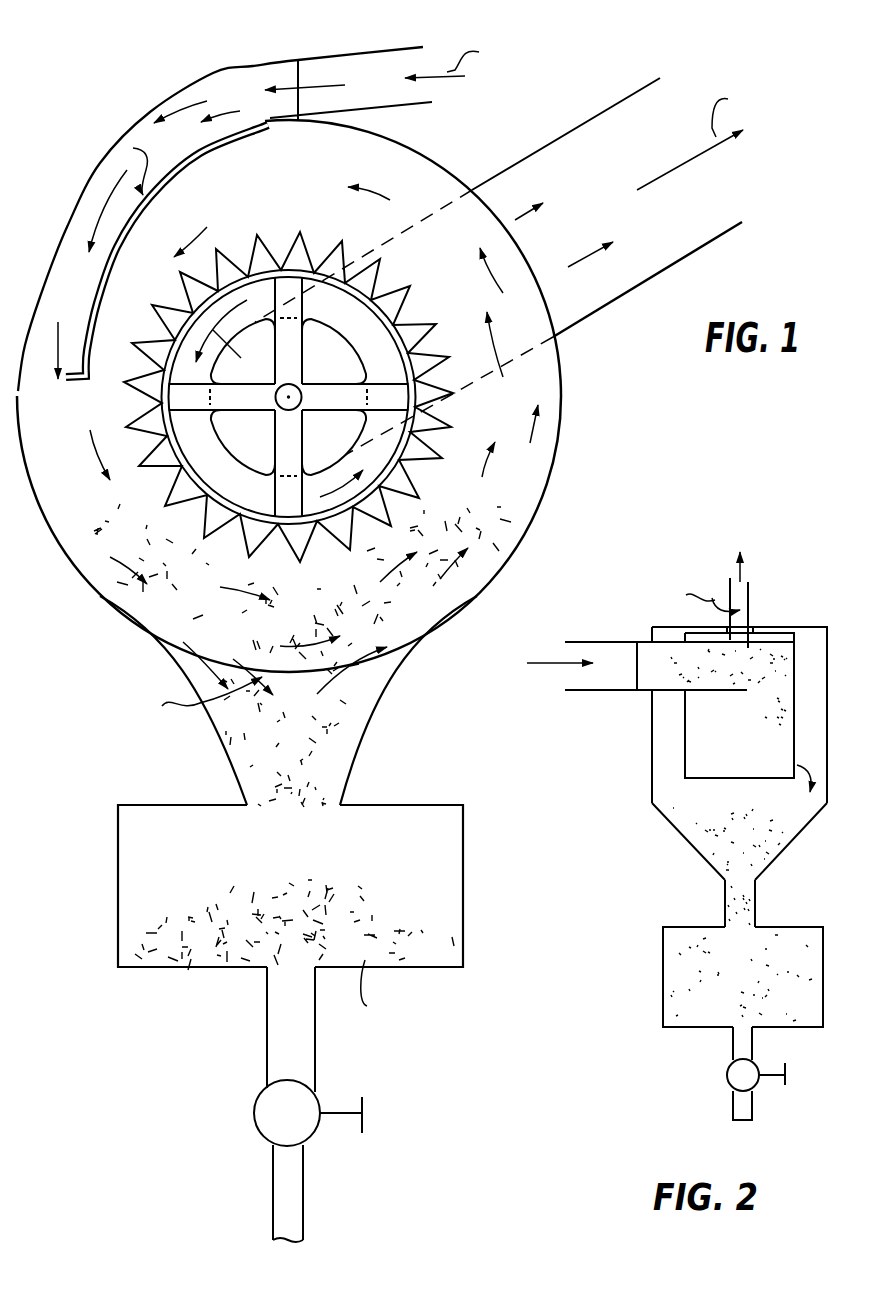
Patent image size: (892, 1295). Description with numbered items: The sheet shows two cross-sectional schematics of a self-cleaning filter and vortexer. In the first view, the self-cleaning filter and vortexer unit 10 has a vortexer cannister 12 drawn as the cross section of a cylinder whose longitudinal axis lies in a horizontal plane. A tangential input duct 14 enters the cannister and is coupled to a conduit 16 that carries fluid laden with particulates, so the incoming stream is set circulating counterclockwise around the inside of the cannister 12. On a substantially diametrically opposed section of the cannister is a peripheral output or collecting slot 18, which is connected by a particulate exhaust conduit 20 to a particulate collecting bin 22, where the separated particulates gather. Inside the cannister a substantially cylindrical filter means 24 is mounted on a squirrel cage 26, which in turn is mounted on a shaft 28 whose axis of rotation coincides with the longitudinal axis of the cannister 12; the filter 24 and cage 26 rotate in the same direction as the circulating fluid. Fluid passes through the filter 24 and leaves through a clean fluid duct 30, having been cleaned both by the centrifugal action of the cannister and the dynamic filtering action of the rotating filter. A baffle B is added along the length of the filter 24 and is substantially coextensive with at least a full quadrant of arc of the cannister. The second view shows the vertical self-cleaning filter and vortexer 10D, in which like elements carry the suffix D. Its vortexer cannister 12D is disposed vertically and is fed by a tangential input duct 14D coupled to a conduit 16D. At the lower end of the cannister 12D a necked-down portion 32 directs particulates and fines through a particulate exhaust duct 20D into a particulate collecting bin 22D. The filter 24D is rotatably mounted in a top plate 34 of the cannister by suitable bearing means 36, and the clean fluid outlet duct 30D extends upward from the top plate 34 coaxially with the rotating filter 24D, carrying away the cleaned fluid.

In FIG. 1, the self-cleaning filter and vortexer unit 10 is at (340, 396).
In FIG. 1, the vortexer cannister 12 is at (553, 471).
In FIG. 1, the tangential input duct 14 is at (214, 75).
In FIG. 1, the conduit 16 is at (348, 52).
In FIG. 1, the peripheral output or collecting slot 18 is at (245, 734).
In FIG. 1, the particulate exhaust conduit 20 is at (228, 754).
In FIG. 1, the particulate collecting bin 22 is at (118, 890).
In FIG. 1, the filter means 24 is at (405, 487).
In FIG. 1, the squirrel cage 26 is at (237, 408).
In FIG. 1, the shaft 28 is at (286, 402).
In FIG. 1, the clean fluid duct 30 is at (645, 285).
In FIG. 1, the baffle B is at (131, 166).
In FIG. 2, the vertical self-cleaning filter and vortexer 10D is at (700, 715).
In FIG. 2, the vortexer cannister 12D is at (652, 715).
In FIG. 2, the tangential input duct 14D is at (646, 642).
In FIG. 2, the conduit 16D is at (633, 677).
In FIG. 2, the particulate exhaust duct 20D is at (757, 900).
In FIG. 2, the particulate collecting bin 22D is at (823, 1008).
In FIG. 2, the filter 24D is at (797, 702).
In FIG. 2, the clean fluid outlet duct 30D is at (730, 588).
In FIG. 2, the necked-down portion 32 is at (786, 848).
In FIG. 2, the top plate 34 is at (795, 627).
In FIG. 2, the bearing means 36 is at (755, 625).